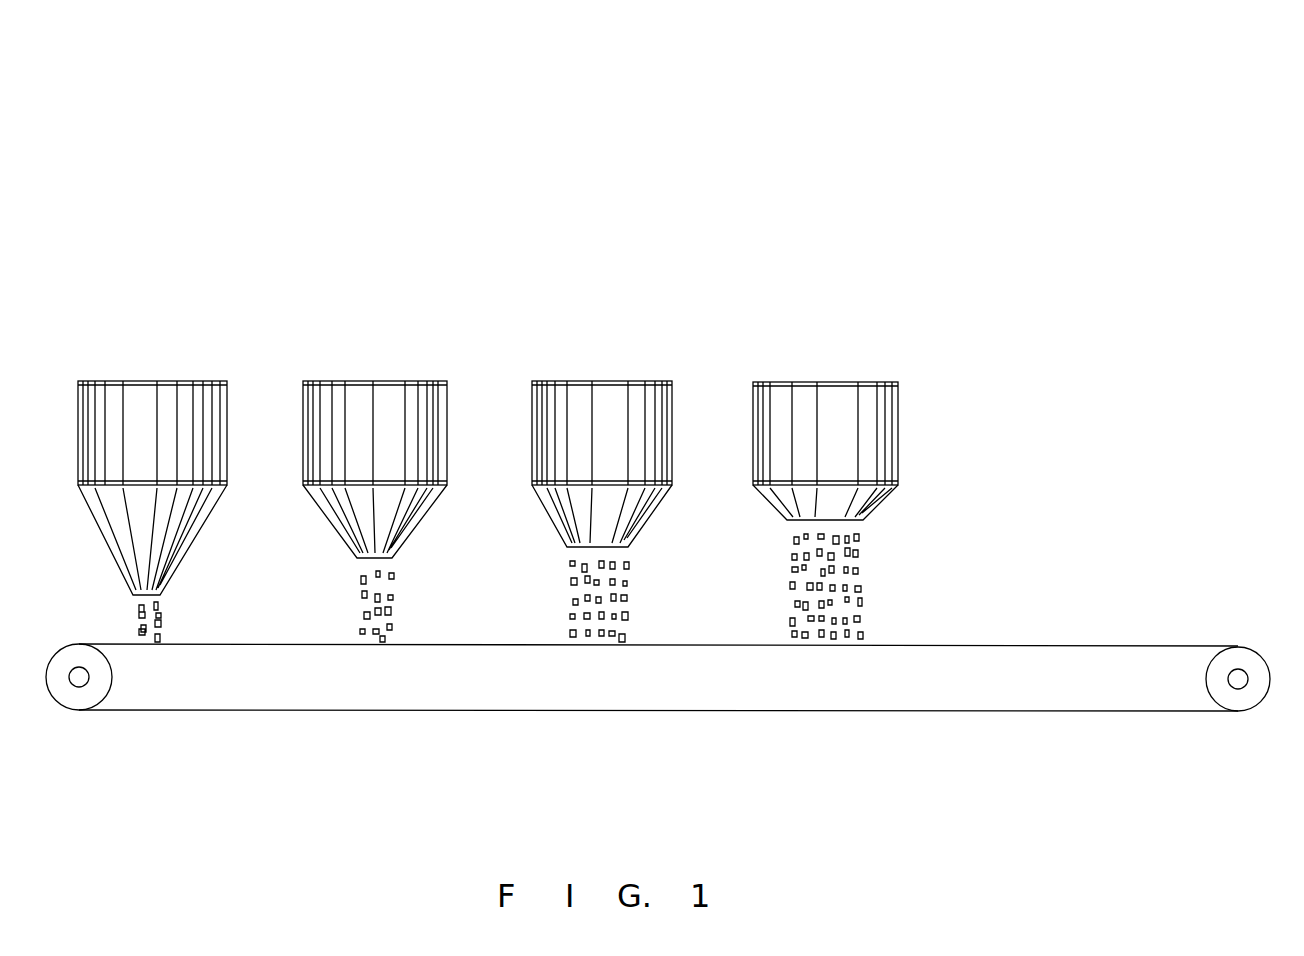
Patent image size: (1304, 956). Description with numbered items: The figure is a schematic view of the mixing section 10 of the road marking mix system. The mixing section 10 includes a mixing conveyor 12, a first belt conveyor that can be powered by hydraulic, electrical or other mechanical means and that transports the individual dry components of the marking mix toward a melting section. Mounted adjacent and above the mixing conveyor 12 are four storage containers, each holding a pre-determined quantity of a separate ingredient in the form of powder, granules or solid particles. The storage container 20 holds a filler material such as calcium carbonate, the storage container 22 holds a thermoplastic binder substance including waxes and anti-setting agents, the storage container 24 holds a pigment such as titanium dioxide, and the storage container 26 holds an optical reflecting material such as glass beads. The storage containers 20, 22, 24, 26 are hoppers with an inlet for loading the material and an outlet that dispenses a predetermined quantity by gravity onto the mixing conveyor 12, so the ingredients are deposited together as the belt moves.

The mixing section 10 is at (810, 135).
The mixing conveyor 12 is at (582, 713).
The storage container 20 is at (224, 400).
The storage container 22 is at (446, 400).
The storage container 24 is at (670, 400).
The storage container 26 is at (902, 400).